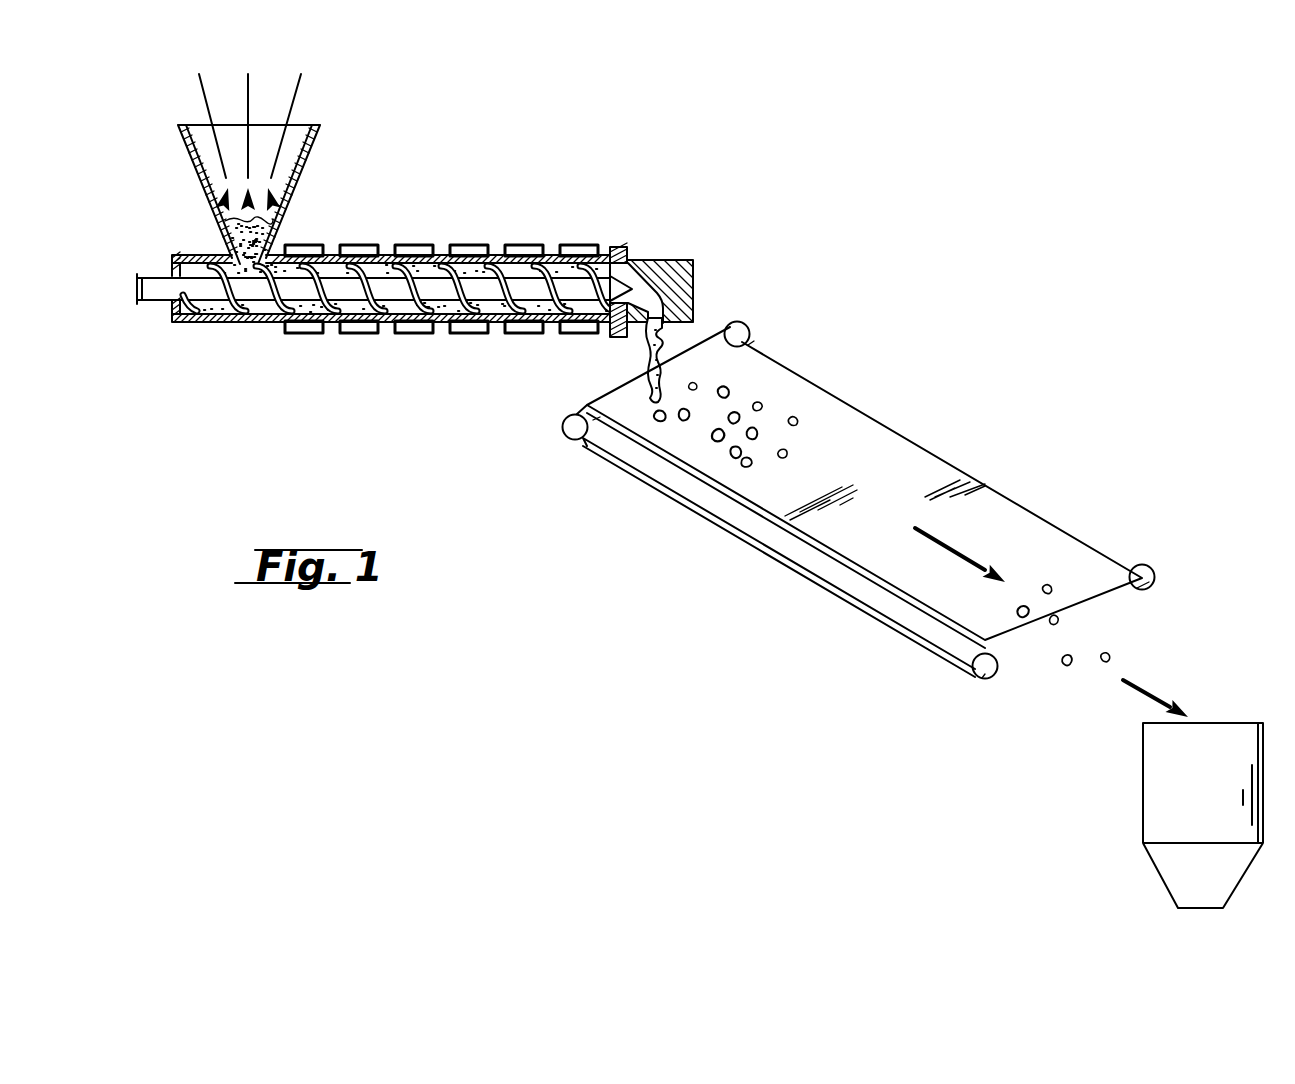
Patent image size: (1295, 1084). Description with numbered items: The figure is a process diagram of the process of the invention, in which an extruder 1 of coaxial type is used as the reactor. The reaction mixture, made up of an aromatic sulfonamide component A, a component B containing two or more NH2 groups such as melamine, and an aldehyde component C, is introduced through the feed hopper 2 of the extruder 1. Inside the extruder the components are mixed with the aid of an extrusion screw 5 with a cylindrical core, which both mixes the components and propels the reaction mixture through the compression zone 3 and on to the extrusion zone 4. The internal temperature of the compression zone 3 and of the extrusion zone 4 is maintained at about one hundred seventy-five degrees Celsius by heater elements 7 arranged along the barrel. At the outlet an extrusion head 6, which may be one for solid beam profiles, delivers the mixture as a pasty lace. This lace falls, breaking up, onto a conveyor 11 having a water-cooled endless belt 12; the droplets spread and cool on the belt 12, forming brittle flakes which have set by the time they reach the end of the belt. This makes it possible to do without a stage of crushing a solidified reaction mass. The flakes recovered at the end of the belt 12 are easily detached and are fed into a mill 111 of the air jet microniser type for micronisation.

The extruder 1 is at (404, 372).
The feed hopper 2 is at (202, 187).
The compression zone 3 is at (265, 316).
The extrusion zone 4 is at (566, 272).
The extrusion screw 5 is at (490, 298).
The extrusion head 6 is at (680, 275).
The heater elements 7 is at (431, 246).
The conveyor 11 is at (912, 416).
The water-cooled endless belt 12 is at (1015, 523).
The mill 111 is at (1240, 708).
The component A is at (210, 126).
The component B is at (248, 126).
The component C is at (286, 126).